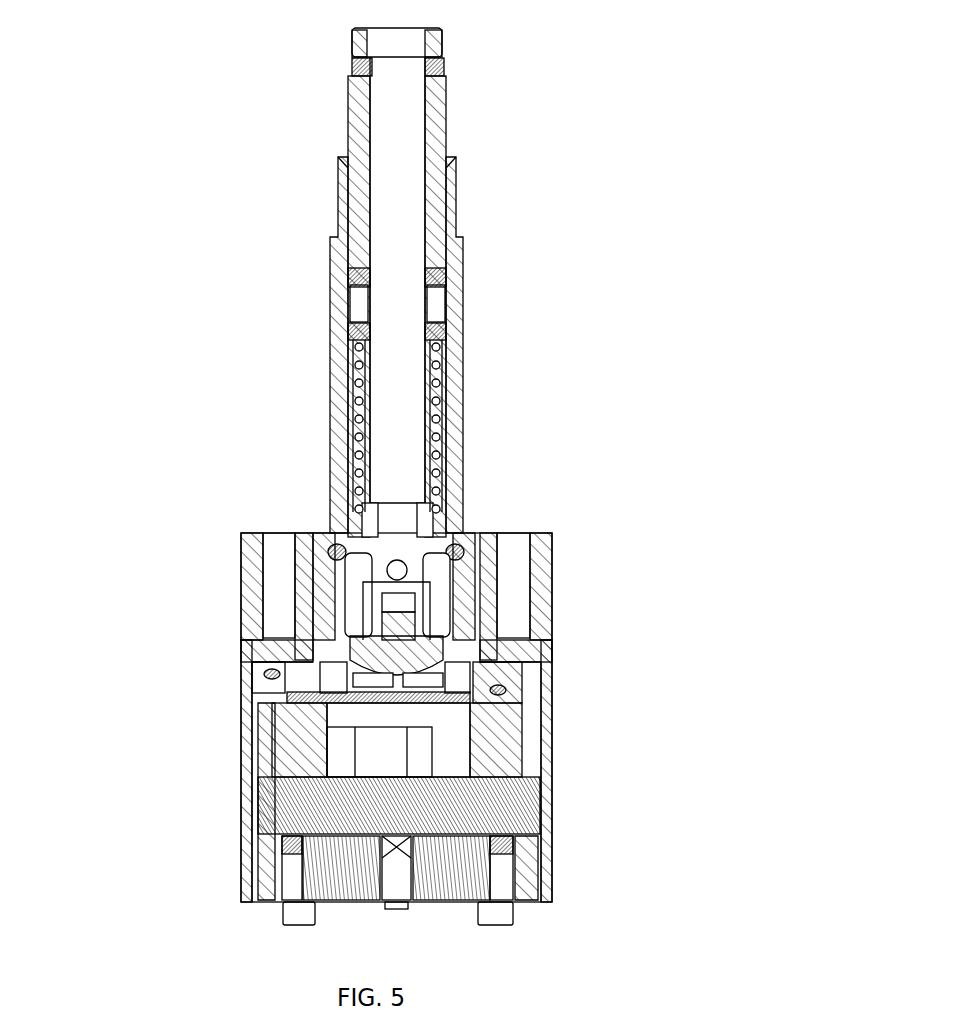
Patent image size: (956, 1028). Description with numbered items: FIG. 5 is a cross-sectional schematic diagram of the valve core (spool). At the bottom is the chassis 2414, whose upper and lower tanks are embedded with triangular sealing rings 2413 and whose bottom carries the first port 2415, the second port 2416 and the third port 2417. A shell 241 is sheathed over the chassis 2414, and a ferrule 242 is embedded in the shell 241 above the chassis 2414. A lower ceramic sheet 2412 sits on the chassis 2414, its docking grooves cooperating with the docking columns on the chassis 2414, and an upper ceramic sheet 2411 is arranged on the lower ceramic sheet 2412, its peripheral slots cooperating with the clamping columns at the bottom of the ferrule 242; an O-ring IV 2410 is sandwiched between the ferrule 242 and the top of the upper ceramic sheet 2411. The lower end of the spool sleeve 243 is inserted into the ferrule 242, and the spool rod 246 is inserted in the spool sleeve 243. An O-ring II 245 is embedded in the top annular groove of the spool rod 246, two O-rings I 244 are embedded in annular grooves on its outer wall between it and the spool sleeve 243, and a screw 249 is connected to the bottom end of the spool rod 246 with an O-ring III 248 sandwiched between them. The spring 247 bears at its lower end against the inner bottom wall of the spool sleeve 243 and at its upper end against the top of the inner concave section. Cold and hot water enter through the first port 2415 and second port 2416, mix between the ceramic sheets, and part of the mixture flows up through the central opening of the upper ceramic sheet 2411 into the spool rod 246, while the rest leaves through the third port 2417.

The shell 241 is at (247, 588).
The ferrule 242 is at (282, 678).
The spool sleeve 243 is at (451, 182).
The O-ring I 244 is at (432, 278).
The O-ring II 245 is at (447, 68).
The spool rod 246 is at (440, 392).
The spring 247 is at (430, 526).
The O-ring III 248 is at (426, 655).
The screw 249 is at (442, 652).
The O-ring IV 2410 is at (502, 690).
The upper ceramic sheet 2411 is at (490, 746).
The lower ceramic sheet 2412 is at (500, 792).
The sealing ring 2413 is at (512, 838).
The chassis 2414 is at (540, 886).
The first port 2415 is at (287, 912).
The second port 2416 is at (510, 911).
The third port 2417 is at (396, 904).